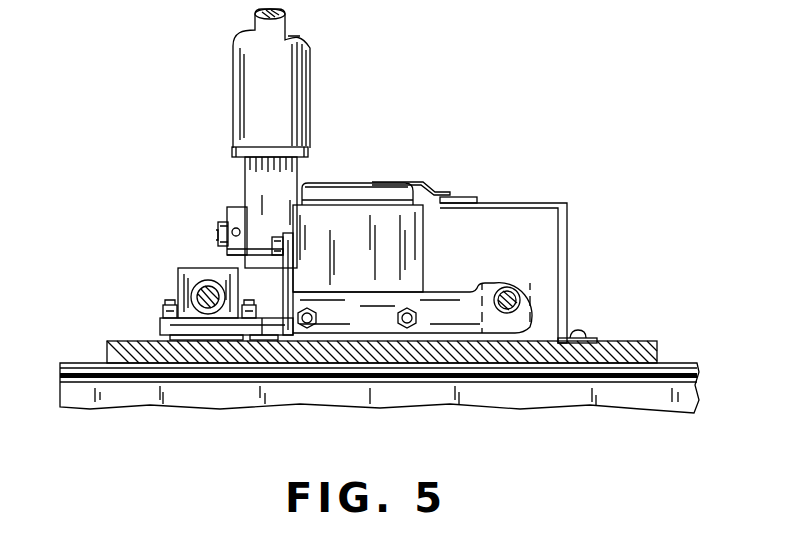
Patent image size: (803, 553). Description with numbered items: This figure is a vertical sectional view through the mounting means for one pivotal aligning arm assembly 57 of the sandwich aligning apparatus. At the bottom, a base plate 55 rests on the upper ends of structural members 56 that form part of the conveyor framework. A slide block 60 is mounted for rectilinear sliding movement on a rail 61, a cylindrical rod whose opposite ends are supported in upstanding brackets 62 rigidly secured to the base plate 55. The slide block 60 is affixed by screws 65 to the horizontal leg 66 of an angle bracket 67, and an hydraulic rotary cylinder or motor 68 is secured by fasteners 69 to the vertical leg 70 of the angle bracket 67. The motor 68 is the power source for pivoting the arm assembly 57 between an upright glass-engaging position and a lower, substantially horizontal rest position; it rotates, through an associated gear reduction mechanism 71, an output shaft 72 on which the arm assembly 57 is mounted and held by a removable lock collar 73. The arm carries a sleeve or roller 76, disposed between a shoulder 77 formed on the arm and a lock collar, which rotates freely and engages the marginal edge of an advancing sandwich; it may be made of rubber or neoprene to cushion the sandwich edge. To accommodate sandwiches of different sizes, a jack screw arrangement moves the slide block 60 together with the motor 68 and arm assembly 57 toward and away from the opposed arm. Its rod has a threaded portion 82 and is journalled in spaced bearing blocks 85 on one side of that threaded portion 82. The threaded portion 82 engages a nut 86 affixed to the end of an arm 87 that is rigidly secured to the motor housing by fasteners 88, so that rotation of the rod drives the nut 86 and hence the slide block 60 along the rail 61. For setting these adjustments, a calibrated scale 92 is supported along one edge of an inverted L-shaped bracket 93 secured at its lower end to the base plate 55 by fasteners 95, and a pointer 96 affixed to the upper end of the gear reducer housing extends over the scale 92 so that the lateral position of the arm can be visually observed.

The base plate 55 is at (645, 342).
The structural members 56 is at (637, 405).
The pivotal aligning arm assembly 57 is at (313, 66).
The slide block 60 is at (180, 276).
The rail 61 is at (207, 288).
The upstanding brackets 62 is at (208, 338).
The screws 65 is at (162, 309).
The horizontal leg 66 is at (264, 324).
The angle bracket 67 is at (295, 250).
The hydraulic rotary cylinder or motor 68 is at (320, 214).
The fasteners 69 is at (273, 242).
The vertical leg 70 is at (292, 276).
The gear reduction mechanism 71 is at (355, 197).
The output shaft 72 is at (220, 230).
The removable lock collar 73 is at (232, 213).
The sleeve or roller 76 is at (272, 62).
The shoulder 77 is at (235, 153).
The threaded portion 82 is at (508, 296).
The bearing blocks 85 is at (520, 340).
The nut 86 is at (540, 290).
The arm 87 is at (442, 301).
The fasteners 88 is at (398, 315).
The calibrated scale 92 is at (462, 197).
The inverted L-shaped bracket 93 is at (549, 203).
The fasteners 95 is at (584, 331).
The pointer 96 is at (437, 190).